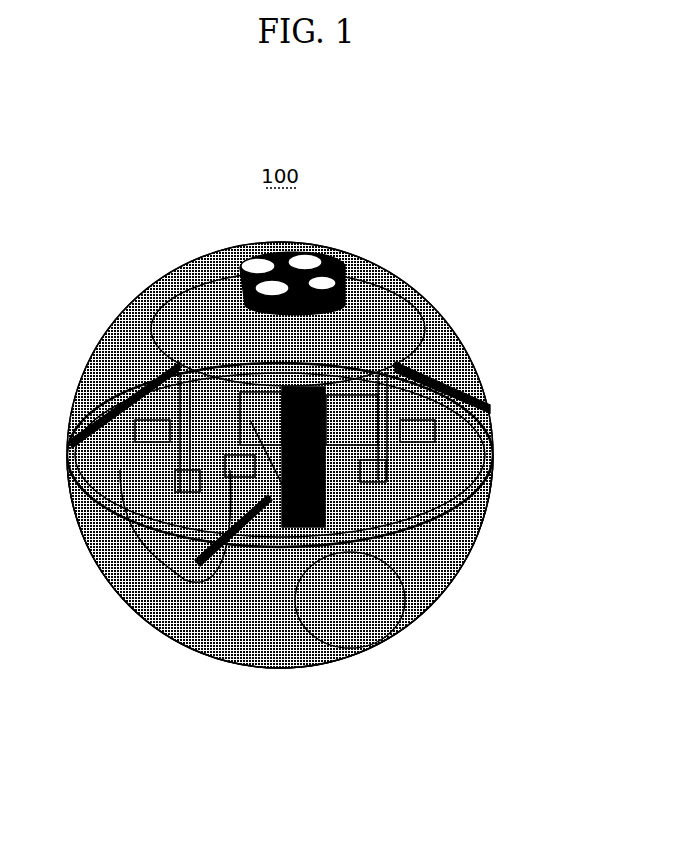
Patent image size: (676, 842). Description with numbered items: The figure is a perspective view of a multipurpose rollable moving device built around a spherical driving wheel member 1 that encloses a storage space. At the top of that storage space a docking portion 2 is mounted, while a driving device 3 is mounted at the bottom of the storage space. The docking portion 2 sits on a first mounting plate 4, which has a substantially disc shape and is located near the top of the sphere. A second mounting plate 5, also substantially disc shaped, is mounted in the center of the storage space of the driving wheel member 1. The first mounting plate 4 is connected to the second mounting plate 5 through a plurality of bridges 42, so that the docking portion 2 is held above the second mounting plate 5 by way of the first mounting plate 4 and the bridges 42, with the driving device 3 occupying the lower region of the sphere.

The spherical driving wheel member 1 is at (466, 346).
The docking portion 2 is at (320, 244).
The driving device 3 is at (262, 680).
The first mounting plate 4 is at (388, 272).
The second mounting plate 5 is at (484, 406).
The bridge 42 is at (115, 364).